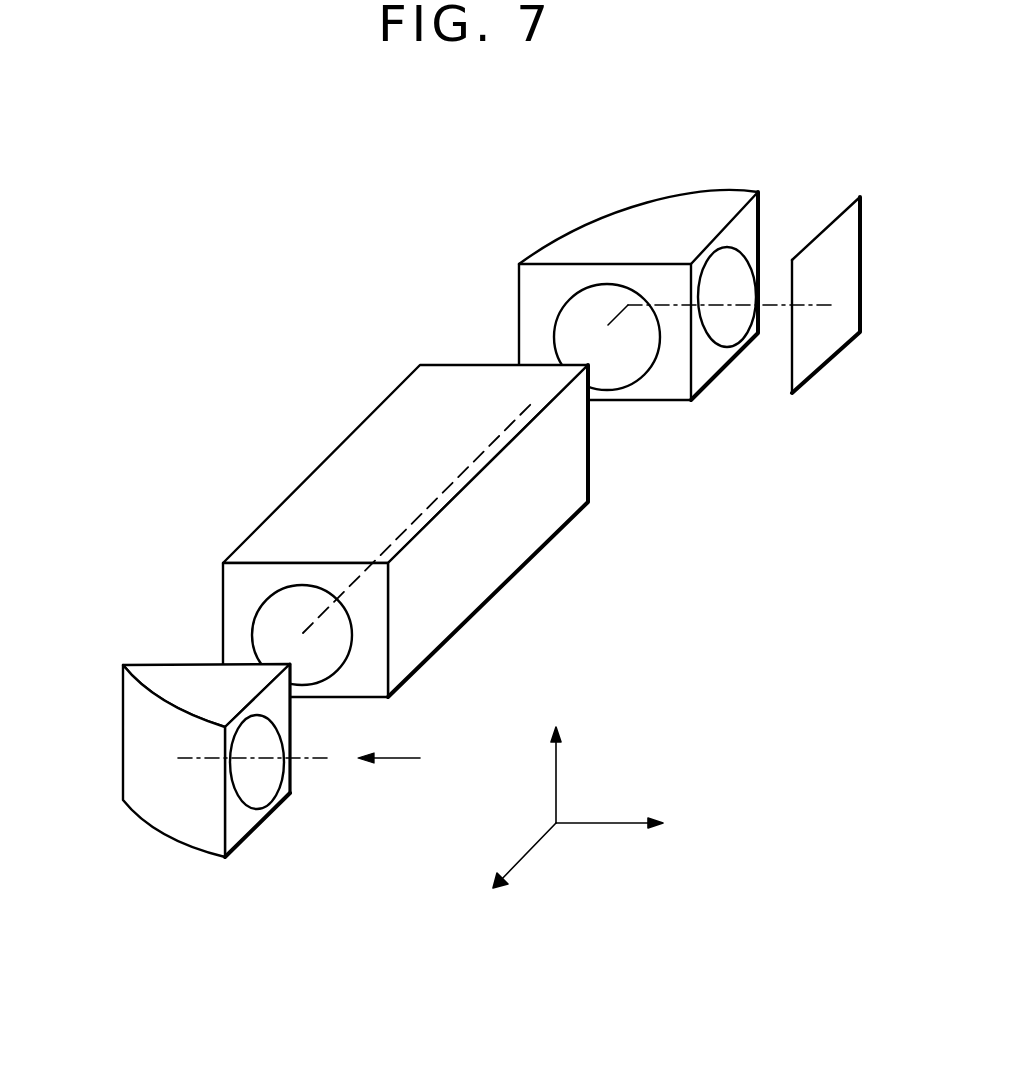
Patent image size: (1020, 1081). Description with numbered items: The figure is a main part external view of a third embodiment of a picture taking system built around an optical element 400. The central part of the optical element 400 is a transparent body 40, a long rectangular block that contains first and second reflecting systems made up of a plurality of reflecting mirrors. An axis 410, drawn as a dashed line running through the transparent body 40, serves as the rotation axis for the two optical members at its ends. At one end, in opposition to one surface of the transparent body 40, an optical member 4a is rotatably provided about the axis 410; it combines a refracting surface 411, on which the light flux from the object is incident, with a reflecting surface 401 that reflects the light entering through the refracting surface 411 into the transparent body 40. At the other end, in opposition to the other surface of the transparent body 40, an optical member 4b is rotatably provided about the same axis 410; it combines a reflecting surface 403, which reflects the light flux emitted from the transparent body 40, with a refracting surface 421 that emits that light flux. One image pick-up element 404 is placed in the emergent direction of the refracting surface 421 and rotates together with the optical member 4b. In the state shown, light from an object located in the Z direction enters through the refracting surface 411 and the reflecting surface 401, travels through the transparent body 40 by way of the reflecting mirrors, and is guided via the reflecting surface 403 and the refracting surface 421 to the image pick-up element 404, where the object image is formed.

The optical element 400 is at (398, 317).
The reflecting surface 403 is at (583, 240).
The optical member 4b is at (665, 217).
The image pick-up element 404 is at (835, 338).
The refracting surface 421 is at (733, 327).
The transparent body 40 is at (505, 548).
The axis 410 is at (468, 465).
The reflecting surface 401 is at (147, 780).
The optical member 4a is at (187, 822).
The refracting surface 411 is at (265, 790).